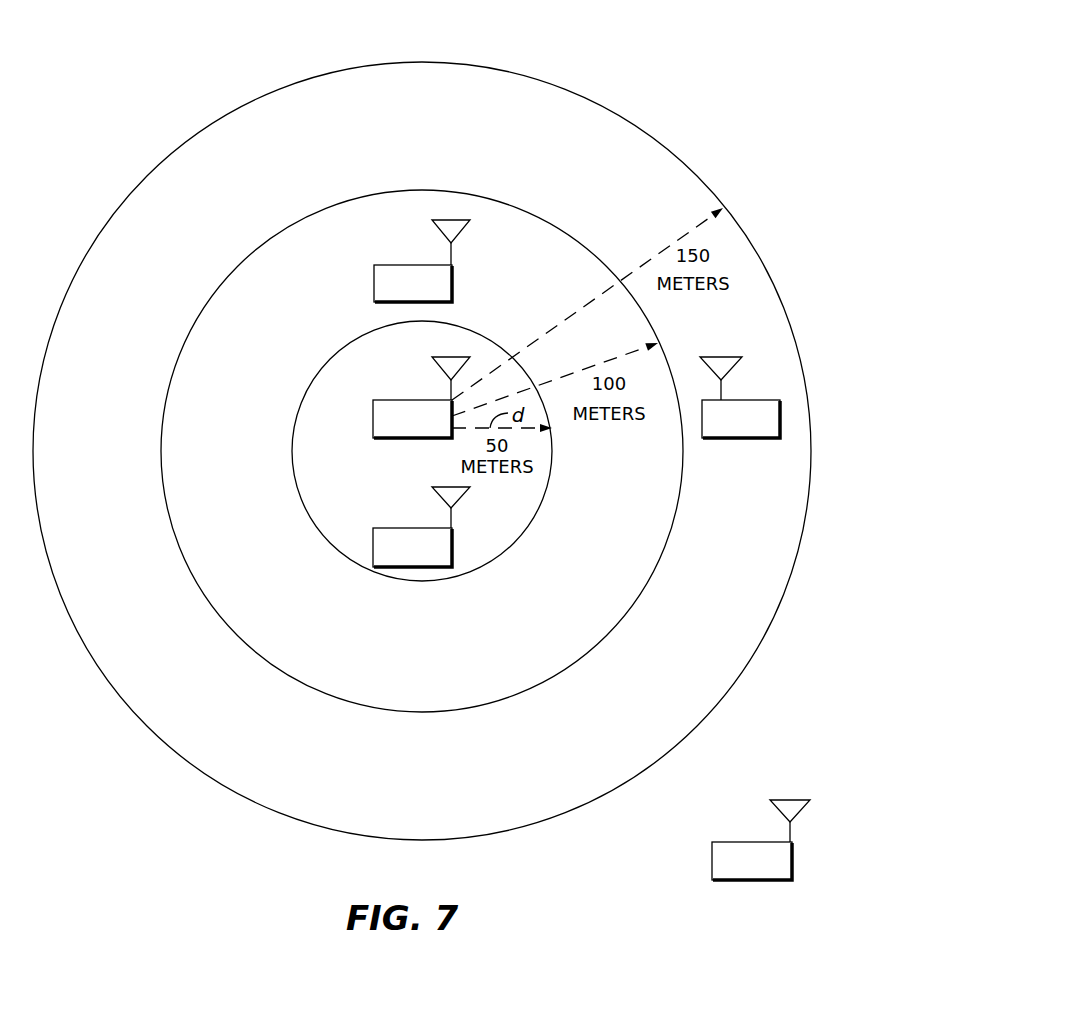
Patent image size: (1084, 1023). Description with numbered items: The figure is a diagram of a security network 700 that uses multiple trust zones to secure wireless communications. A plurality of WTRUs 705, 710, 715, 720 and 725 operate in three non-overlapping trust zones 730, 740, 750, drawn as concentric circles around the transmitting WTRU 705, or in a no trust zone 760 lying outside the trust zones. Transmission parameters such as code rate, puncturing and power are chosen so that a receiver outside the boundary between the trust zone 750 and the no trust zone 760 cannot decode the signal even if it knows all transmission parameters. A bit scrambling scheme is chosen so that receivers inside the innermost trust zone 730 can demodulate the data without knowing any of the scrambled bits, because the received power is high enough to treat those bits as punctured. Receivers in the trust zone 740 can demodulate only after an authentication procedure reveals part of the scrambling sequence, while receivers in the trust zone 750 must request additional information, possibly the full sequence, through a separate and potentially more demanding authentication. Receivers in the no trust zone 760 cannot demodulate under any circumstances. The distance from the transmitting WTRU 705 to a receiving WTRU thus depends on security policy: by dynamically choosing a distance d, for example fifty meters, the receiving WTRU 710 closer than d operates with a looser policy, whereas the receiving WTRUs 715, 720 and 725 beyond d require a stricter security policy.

The security network 700 is at (742, 41).
The transmitting WTRU 705 is at (385, 400).
The receiving WTRU 710 is at (452, 545).
The receiving WTRU 715 is at (374, 277).
The receiving WTRU 720 is at (742, 438).
The receiving WTRU 725 is at (752, 880).
The trust zone 730 is at (313, 513).
The trust zone 740 is at (215, 513).
The trust zone 750 is at (88, 513).
The no trust zone 760 is at (752, 775).